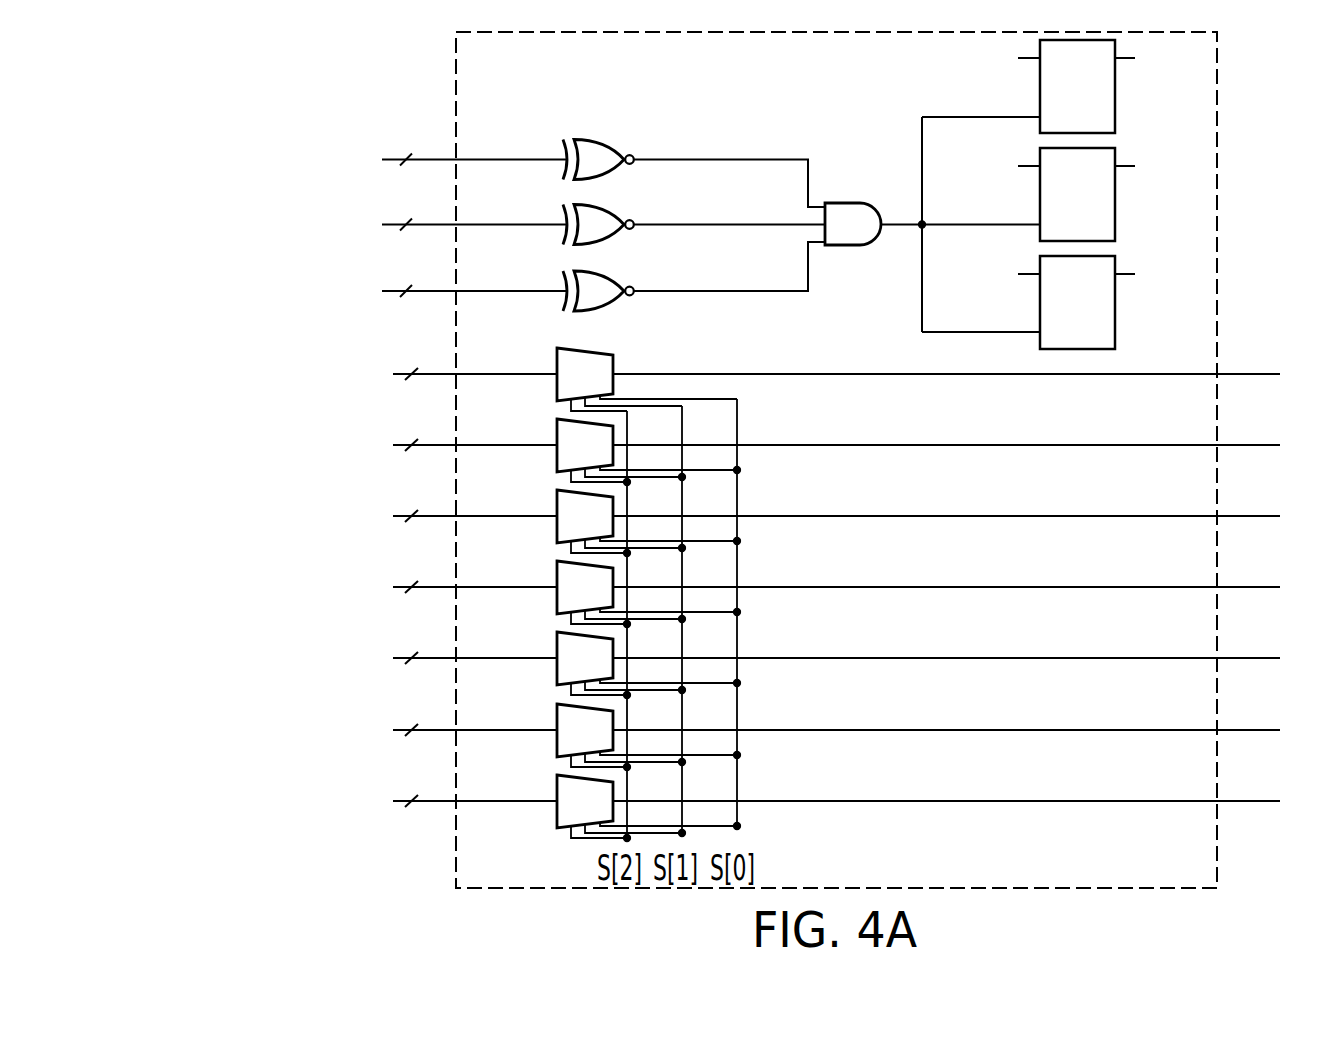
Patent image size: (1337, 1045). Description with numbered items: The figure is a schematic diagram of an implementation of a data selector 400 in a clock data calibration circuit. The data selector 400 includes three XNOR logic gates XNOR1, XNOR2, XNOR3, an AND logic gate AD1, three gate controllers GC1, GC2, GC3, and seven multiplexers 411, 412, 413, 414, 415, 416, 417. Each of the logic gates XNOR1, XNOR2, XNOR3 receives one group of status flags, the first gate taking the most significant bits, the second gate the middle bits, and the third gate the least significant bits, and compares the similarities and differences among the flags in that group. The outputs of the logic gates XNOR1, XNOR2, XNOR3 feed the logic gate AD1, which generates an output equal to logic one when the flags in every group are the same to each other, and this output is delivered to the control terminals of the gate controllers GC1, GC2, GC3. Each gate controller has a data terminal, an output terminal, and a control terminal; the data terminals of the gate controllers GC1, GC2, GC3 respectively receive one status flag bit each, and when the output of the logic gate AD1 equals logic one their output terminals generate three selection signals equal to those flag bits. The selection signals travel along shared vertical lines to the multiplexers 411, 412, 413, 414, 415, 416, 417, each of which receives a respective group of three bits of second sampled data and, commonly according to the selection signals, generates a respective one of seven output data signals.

The data selector 400 is at (1218, 83).
The multiplexer 411 is at (557, 351).
The multiplexer 412 is at (557, 422).
The multiplexer 413 is at (557, 493).
The multiplexer 414 is at (557, 564).
The multiplexer 415 is at (557, 635).
The multiplexer 416 is at (557, 707).
The multiplexer 417 is at (557, 778).
The logic gate XNOR1 is at (612, 136).
The logic gate XNOR2 is at (612, 201).
The logic gate XNOR3 is at (612, 267).
The logic gate AD1 is at (852, 202).
The gate controller GC1 is at (1115, 123).
The gate controller GC2 is at (1115, 231).
The gate controller GC3 is at (1115, 339).